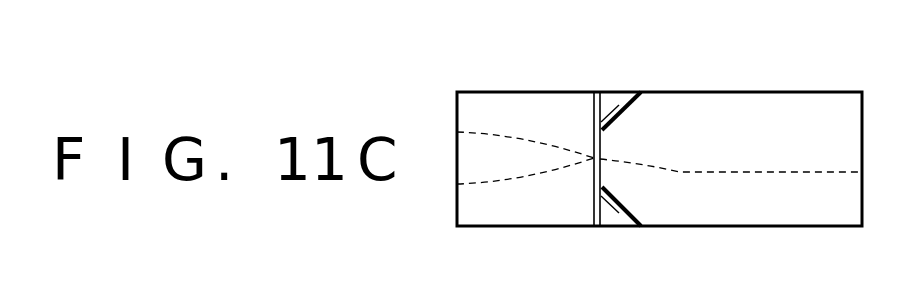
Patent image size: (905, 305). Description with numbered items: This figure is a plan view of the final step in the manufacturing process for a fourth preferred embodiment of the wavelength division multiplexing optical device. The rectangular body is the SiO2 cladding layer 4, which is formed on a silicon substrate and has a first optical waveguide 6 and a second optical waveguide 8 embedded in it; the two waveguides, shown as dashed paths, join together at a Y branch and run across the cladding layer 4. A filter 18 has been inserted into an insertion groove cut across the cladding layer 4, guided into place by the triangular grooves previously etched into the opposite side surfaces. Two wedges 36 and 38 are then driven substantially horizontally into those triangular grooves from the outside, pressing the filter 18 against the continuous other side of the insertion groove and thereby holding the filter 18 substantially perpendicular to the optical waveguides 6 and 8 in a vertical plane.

The cladding layer 4 is at (770, 100).
The first optical waveguide 6 is at (757, 172).
The second optical waveguide 8 is at (514, 183).
The filter 18 is at (597, 91).
The wedge 36 is at (615, 217).
The wedge 38 is at (615, 97).